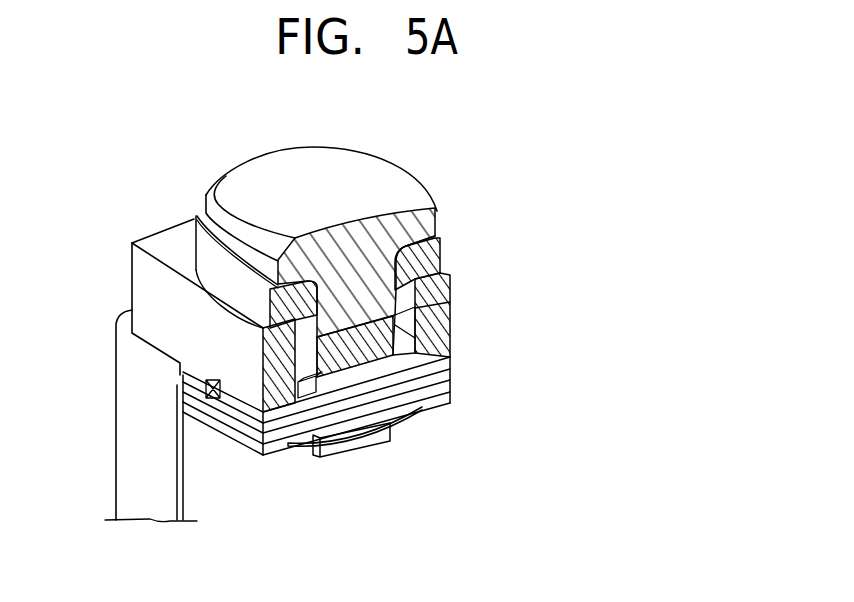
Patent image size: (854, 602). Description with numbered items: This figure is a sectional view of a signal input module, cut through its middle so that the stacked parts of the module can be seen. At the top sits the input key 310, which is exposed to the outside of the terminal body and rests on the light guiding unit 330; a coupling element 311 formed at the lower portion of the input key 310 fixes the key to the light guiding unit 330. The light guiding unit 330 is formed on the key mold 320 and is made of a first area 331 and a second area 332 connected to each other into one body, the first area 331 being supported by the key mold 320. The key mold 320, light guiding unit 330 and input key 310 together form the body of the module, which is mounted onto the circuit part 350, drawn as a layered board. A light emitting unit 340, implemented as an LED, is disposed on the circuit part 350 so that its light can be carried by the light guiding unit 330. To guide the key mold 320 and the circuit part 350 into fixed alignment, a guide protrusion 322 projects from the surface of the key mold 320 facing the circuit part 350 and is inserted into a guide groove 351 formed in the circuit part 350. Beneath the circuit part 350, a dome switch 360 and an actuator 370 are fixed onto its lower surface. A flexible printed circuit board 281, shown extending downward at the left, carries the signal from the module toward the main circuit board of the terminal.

The input key 310 is at (413, 221).
The coupling element 311 is at (430, 243).
The key mold 320 is at (440, 320).
The guide protrusion 322 is at (181, 375).
The light guiding unit 330 is at (400, 286).
The first area 331 is at (426, 270).
The second area 332 is at (440, 301).
The light emitting unit 340 is at (418, 352).
The circuit part 350 is at (452, 357).
The guide groove 351 is at (212, 398).
The dome switch 360 is at (305, 447).
The actuator 370 is at (375, 440).
The flexible printed circuit board 281 is at (143, 487).